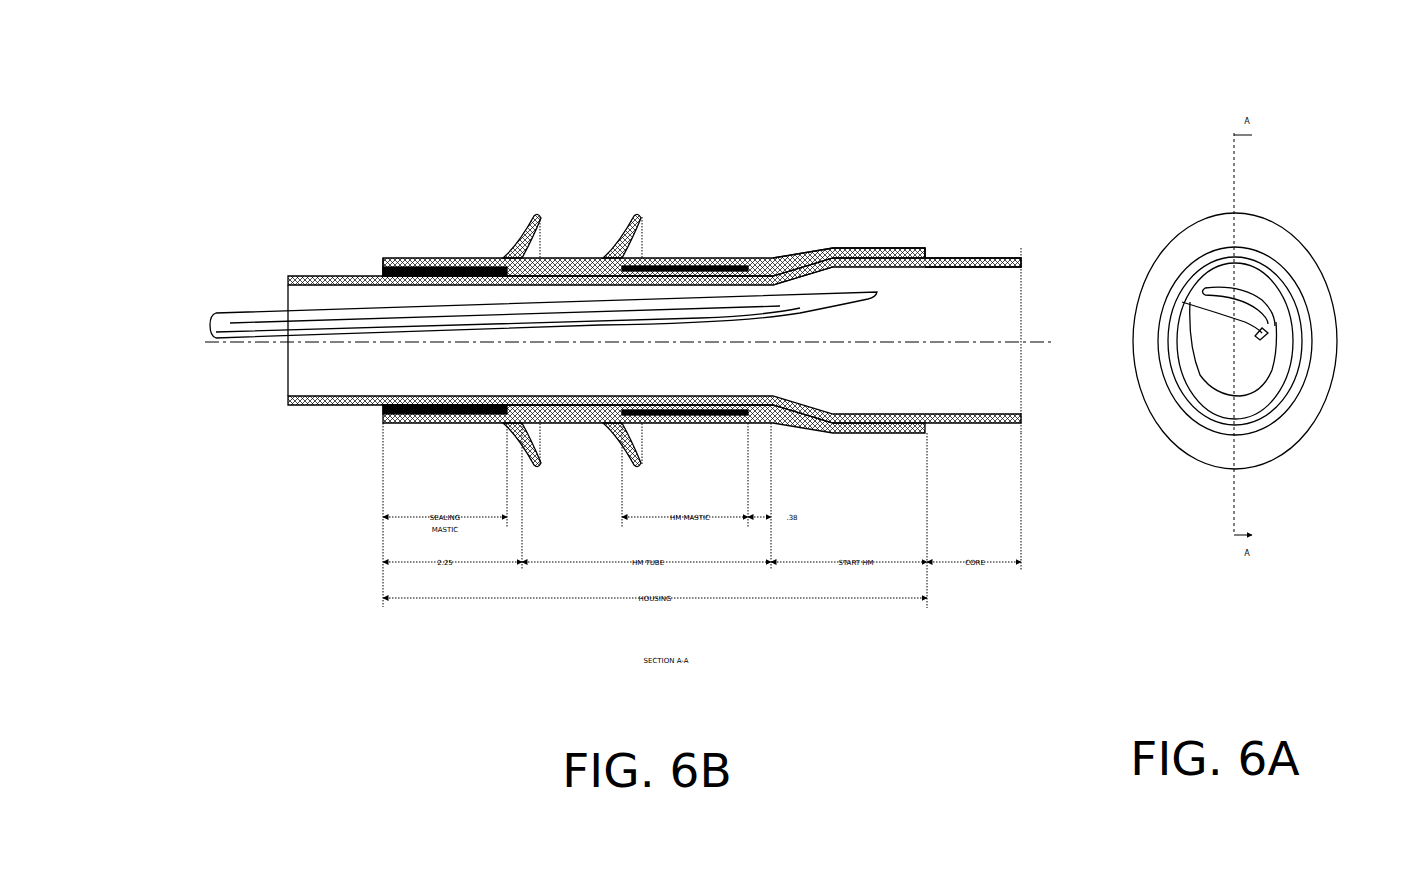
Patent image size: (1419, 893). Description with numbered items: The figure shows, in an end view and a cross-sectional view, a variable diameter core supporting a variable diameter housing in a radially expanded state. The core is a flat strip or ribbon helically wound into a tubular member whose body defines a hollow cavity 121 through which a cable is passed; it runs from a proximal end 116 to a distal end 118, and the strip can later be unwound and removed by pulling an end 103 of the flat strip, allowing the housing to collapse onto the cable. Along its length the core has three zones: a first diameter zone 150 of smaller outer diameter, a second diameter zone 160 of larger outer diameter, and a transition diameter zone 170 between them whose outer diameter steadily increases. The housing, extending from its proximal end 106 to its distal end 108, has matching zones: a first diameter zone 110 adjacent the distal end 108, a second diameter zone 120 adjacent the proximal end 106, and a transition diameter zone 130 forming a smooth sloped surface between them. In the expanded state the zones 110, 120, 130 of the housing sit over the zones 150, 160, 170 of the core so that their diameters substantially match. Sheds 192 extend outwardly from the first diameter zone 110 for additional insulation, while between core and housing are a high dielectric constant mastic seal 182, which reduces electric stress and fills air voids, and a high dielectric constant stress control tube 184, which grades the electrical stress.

In FIG. 6A, the end of the flat strip 103 is at (1266, 318).
In FIG. 6B, the end of the flat strip 103 is at (237, 322).
In FIG. 6B, the proximal end 106 is at (923, 252).
In FIG. 6B, the distal end 108 is at (381, 262).
In FIG. 6A, the first diameter zone 110 is at (1202, 412).
In FIG. 6B, the first diameter zone 110 is at (450, 260).
In FIG. 6B, the proximal end 116 is at (1023, 262).
In FIG. 6B, the distal end 118 is at (288, 405).
In FIG. 6A, the second diameter zone 120 is at (1155, 390).
In FIG. 6B, the second diameter zone 120 is at (902, 250).
In FIG. 6A, the hollow cavity 121 is at (1205, 338).
In FIG. 6B, the hollow cavity 121 is at (1005, 322).
In FIG. 6B, the transition diameter zone 130 is at (800, 257).
In FIG. 6A, the first diameter zone 150 is at (1261, 272).
In FIG. 6B, the first diameter zone 150 is at (344, 278).
In FIG. 6B, the second diameter zone 160 is at (953, 263).
In FIG. 6B, the transition diameter zone 170 is at (808, 267).
In FIG. 6B, the high dielectric constant mastic seal 182 is at (417, 270).
In FIG. 6B, the high dielectric constant stress control tube 184 is at (578, 405).
In FIG. 6B, the sheds 192 is at (637, 217).